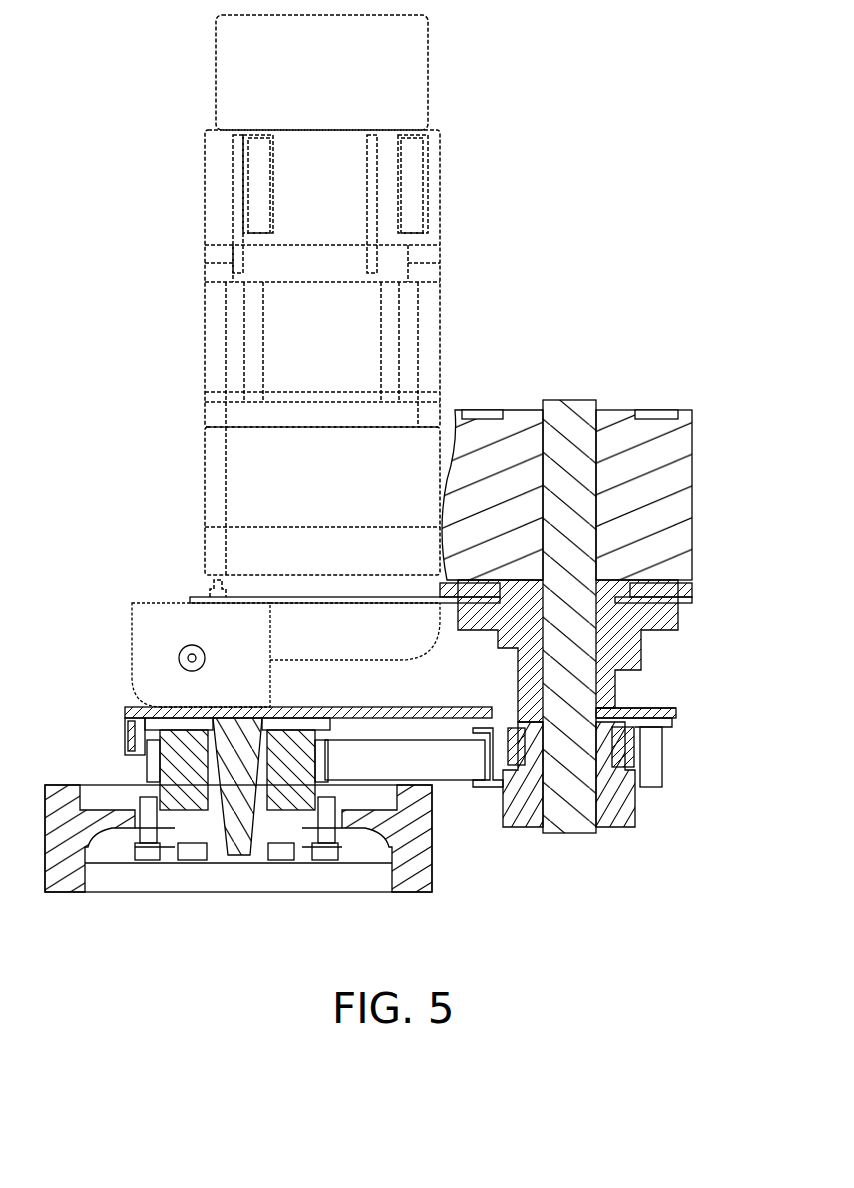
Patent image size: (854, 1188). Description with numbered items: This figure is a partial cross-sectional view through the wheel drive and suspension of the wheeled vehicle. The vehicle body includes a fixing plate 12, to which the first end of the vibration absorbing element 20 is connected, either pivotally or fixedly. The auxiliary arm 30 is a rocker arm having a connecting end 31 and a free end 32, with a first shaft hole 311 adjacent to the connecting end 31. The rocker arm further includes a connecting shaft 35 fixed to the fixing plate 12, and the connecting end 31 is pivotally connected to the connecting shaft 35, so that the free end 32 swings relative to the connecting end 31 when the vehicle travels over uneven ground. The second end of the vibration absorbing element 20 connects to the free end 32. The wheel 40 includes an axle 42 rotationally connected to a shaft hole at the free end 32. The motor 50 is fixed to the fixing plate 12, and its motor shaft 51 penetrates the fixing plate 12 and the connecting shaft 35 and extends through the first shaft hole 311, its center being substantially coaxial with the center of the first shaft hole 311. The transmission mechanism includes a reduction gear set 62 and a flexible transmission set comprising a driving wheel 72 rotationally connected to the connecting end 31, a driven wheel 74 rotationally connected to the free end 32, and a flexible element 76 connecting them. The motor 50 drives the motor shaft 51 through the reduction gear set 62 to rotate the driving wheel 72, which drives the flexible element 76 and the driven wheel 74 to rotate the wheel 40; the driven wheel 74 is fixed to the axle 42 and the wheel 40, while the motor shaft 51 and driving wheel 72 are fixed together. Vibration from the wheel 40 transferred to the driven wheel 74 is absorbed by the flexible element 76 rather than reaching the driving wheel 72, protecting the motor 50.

The fixing plate 12 is at (690, 590).
The vibration absorbing element 20 is at (145, 658).
The auxiliary arm 30 is at (130, 708).
The connecting end 31 is at (668, 722).
The first shaft hole 311 is at (650, 703).
The free end 32 is at (130, 736).
The connecting shaft 35 is at (670, 618).
The wheel 40 is at (72, 878).
The axle 42 is at (232, 860).
The motor 50 is at (215, 350).
The motor shaft 51 is at (560, 822).
The reduction gear set 62 is at (678, 494).
The driving wheel 72 is at (620, 822).
The driven wheel 74 is at (170, 760).
The flexible element 76 is at (462, 772).